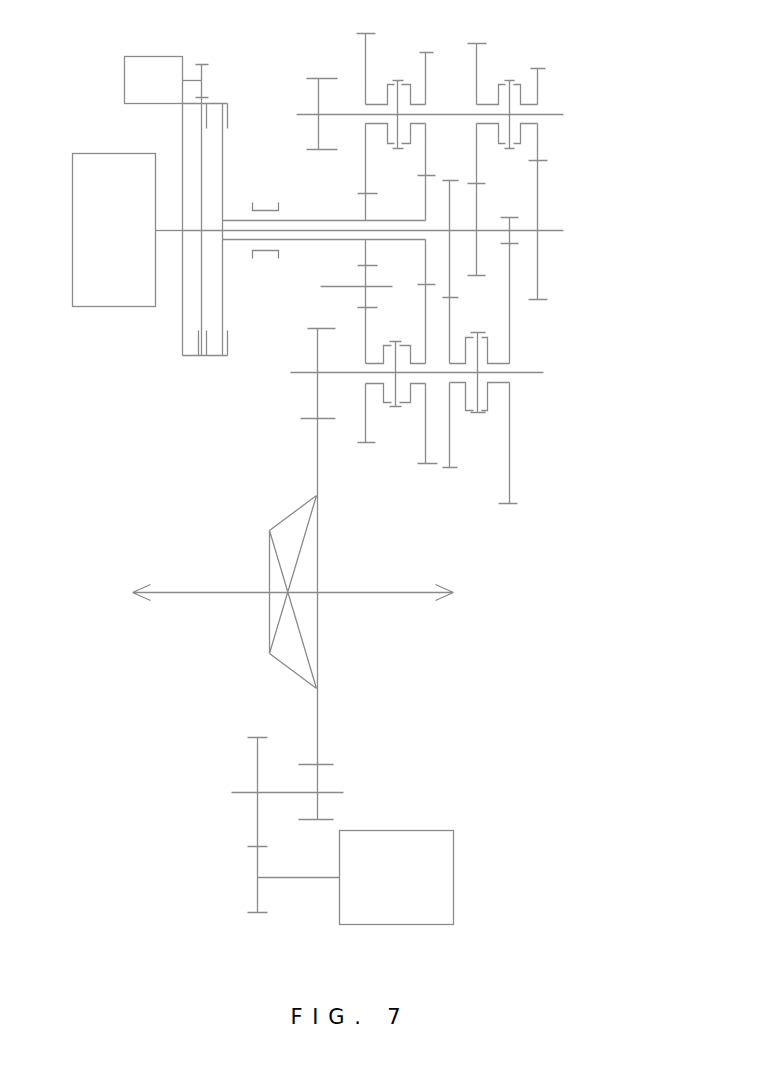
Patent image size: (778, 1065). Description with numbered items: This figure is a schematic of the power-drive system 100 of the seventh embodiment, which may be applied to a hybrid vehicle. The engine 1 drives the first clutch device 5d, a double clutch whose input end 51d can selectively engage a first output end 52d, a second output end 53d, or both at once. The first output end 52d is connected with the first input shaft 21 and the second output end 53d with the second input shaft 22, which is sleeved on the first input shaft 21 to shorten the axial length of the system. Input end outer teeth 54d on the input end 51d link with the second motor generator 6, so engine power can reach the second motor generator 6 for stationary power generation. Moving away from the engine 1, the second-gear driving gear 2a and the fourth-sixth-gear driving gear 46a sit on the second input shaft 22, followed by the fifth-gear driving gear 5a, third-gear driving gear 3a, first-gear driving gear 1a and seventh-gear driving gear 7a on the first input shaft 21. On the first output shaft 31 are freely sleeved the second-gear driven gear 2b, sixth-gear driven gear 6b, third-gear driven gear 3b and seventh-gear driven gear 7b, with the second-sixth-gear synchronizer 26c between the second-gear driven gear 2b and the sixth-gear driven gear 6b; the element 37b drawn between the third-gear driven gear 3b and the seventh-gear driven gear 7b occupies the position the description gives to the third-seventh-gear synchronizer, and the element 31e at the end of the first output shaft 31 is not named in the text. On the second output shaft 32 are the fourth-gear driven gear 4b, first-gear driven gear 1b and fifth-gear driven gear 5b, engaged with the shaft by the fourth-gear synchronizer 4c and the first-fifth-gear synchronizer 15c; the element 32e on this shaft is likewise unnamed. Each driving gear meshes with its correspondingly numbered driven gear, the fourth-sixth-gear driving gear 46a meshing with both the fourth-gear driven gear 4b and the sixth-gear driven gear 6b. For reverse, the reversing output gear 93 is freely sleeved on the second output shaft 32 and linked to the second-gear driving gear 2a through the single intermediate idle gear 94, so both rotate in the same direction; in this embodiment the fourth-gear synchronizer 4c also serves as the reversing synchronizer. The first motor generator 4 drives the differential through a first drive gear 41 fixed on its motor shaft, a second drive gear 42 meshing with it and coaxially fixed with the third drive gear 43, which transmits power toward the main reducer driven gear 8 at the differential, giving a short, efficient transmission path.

The power-drive system 100 is at (665, 79).
The engine 1 is at (83, 210).
The second motor generator 6 is at (142, 82).
The input end outer teeth 54d is at (202, 107).
The first clutch device 5d is at (132, 328).
The input end 51d is at (183, 302).
The first output end 52d is at (202, 323).
The second output end 53d is at (223, 328).
The first input shaft 21 is at (545, 232).
The second input shaft 22 is at (302, 238).
The second-gear driving gear 2a is at (363, 207).
The first output shaft 31 is at (563, 113).
The gear 31e is at (308, 77).
The second-gear driven gear 2b is at (358, 32).
The second-sixth-gear synchronizer 26c is at (395, 80).
The sixth-gear driven gear 6b is at (421, 50).
The fourth-sixth-gear driving gear 46a is at (423, 197).
The third-gear driven gear 3b is at (468, 42).
The sun gear 37b is at (509, 80).
The seventh-gear driven gear 7b is at (541, 78).
The fifth-gear driving gear 5a is at (448, 180).
The third-gear driving gear 3a is at (477, 193).
The first-gear driving gear 1a is at (510, 213).
The seventh-gear driving gear 7a is at (537, 258).
The intermediate idle gear 94 is at (362, 292).
The second output shaft 32 is at (535, 372).
The gear 32e is at (308, 330).
The fourth-gear synchronizer 4c is at (400, 407).
The reversing output gear 93 is at (365, 442).
The fourth-gear driven gear 4b is at (428, 467).
The first-fifth-gear synchronizer 15c is at (470, 413).
The fifth-gear driven gear 5b is at (450, 450).
The first-gear driven gear 1b is at (508, 462).
The main reducer driven gear 8 is at (316, 717).
The third drive gear 43 is at (313, 770).
The second drive gear 42 is at (252, 822).
The first drive gear 41 is at (256, 883).
The first motor generator 4 is at (357, 902).